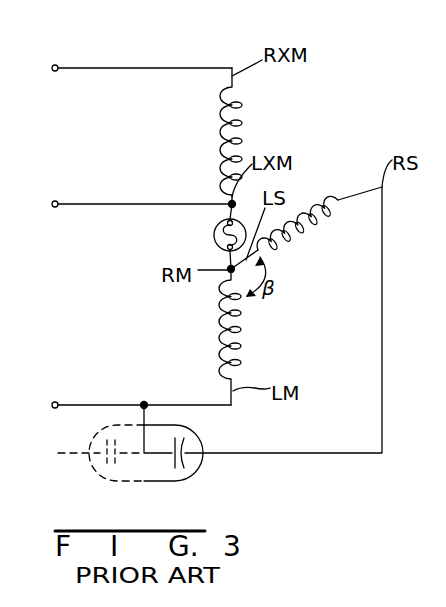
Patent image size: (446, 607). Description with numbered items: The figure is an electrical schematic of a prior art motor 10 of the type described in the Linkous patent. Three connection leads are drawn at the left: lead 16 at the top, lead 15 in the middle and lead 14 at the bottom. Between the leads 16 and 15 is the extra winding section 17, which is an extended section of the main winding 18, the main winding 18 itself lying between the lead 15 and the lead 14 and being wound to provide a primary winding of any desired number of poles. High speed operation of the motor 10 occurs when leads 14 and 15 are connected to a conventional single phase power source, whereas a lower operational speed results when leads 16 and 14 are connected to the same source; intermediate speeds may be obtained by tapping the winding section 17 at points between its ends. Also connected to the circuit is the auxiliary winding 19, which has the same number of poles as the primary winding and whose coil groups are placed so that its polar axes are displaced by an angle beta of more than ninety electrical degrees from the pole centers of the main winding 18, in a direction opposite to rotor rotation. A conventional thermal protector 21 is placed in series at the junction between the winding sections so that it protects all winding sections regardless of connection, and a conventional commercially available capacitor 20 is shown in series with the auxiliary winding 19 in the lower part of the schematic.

The motor 10 is at (100, 311).
The lead 14 is at (102, 400).
The lead 15 is at (116, 200).
The lead 16 is at (96, 68).
The extra winding section 17 is at (237, 123).
The main winding 18 is at (236, 348).
The auxiliary winding 19 is at (336, 214).
The capacitor 20 is at (190, 477).
The thermal protector 21 is at (213, 237).